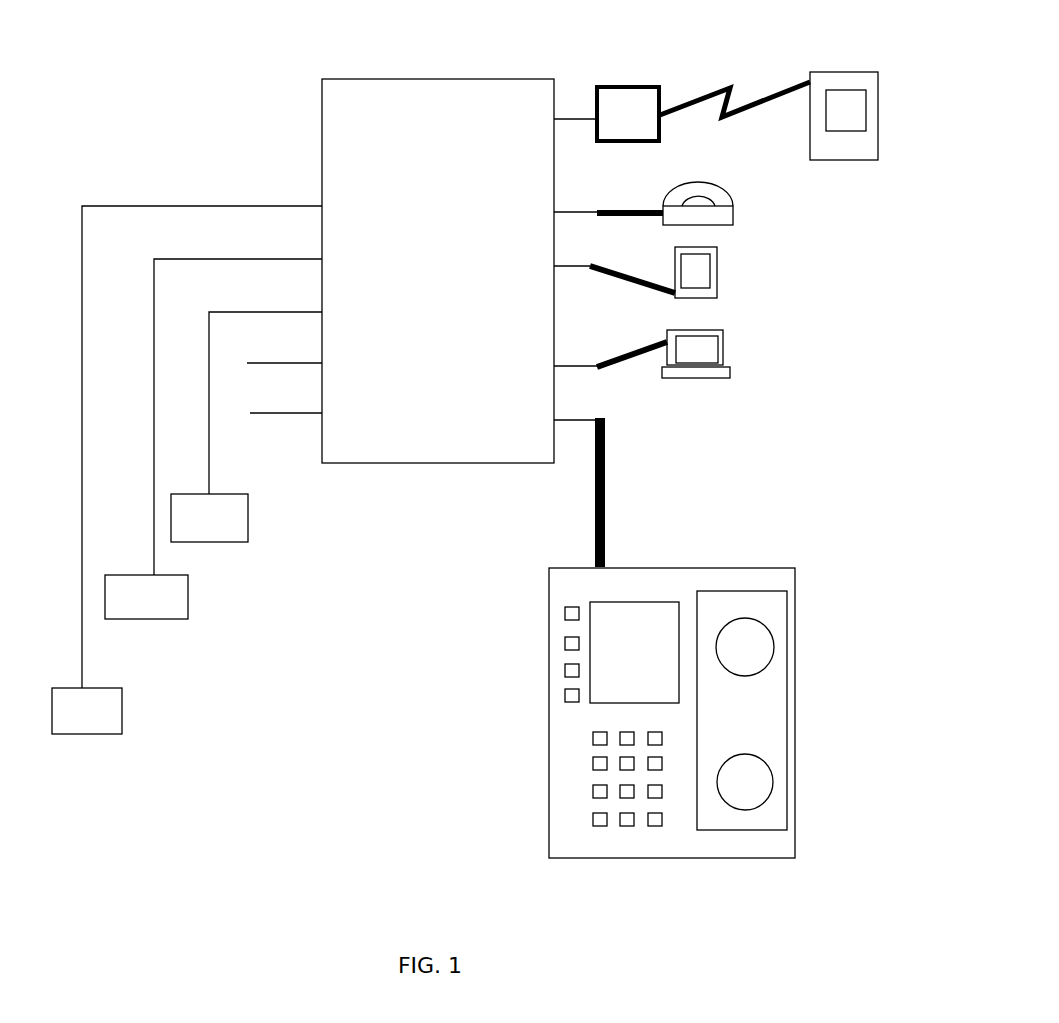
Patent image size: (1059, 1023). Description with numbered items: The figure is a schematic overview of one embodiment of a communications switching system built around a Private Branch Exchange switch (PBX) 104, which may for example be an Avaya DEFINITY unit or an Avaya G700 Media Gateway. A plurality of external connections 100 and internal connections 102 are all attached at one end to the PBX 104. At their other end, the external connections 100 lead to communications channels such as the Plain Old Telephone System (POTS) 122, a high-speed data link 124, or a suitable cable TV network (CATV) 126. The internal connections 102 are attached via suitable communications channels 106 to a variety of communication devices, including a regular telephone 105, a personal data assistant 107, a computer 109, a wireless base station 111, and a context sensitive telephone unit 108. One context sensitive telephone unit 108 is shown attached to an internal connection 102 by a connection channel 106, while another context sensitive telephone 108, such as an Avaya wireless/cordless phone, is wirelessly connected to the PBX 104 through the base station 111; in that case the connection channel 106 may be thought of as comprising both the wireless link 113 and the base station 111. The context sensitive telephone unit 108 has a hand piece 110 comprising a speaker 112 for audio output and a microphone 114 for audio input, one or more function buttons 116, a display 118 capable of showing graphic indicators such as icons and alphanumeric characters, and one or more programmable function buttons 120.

The external connections 100 is at (291, 204).
The internal connections 102 is at (568, 118).
The Private Branch Exchange switch (PBX) 104 is at (423, 78).
The regular telephone 105 is at (735, 210).
The communications channel 106 is at (621, 207).
The personal data assistant 107 is at (720, 285).
The context sensitive telephone unit 108 is at (850, 67).
The computer 109 is at (727, 350).
The hand piece 110 is at (788, 707).
The wireless base station 111 is at (647, 87).
The speaker 112 is at (773, 633).
The wireless link 113 is at (748, 100).
The microphone 114 is at (773, 780).
The function buttons 116 is at (657, 828).
The display 118 is at (595, 602).
The programmable function buttons 120 is at (570, 670).
The Plain Old Telephone System (POTS) 122 is at (248, 520).
The high-speed data link 124 is at (188, 603).
The cable TV network (CATV) 126 is at (122, 713).